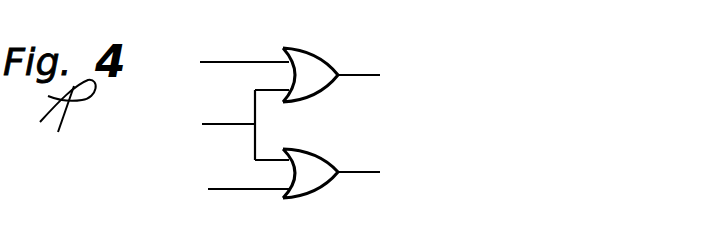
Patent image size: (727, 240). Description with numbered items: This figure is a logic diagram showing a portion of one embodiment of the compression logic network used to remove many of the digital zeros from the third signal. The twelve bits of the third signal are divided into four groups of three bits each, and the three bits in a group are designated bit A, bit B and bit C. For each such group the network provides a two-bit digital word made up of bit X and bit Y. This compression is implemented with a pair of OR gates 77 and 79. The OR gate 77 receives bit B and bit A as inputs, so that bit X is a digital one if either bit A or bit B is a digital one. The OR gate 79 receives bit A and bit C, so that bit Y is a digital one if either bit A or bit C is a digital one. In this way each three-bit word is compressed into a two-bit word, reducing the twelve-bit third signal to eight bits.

The OR gate 77 is at (315, 55).
The OR gate 79 is at (324, 149).
The bit A is at (234, 125).
The bit B is at (230, 61).
The bit C is at (237, 191).
The bit X is at (369, 78).
The bit Y is at (369, 174).